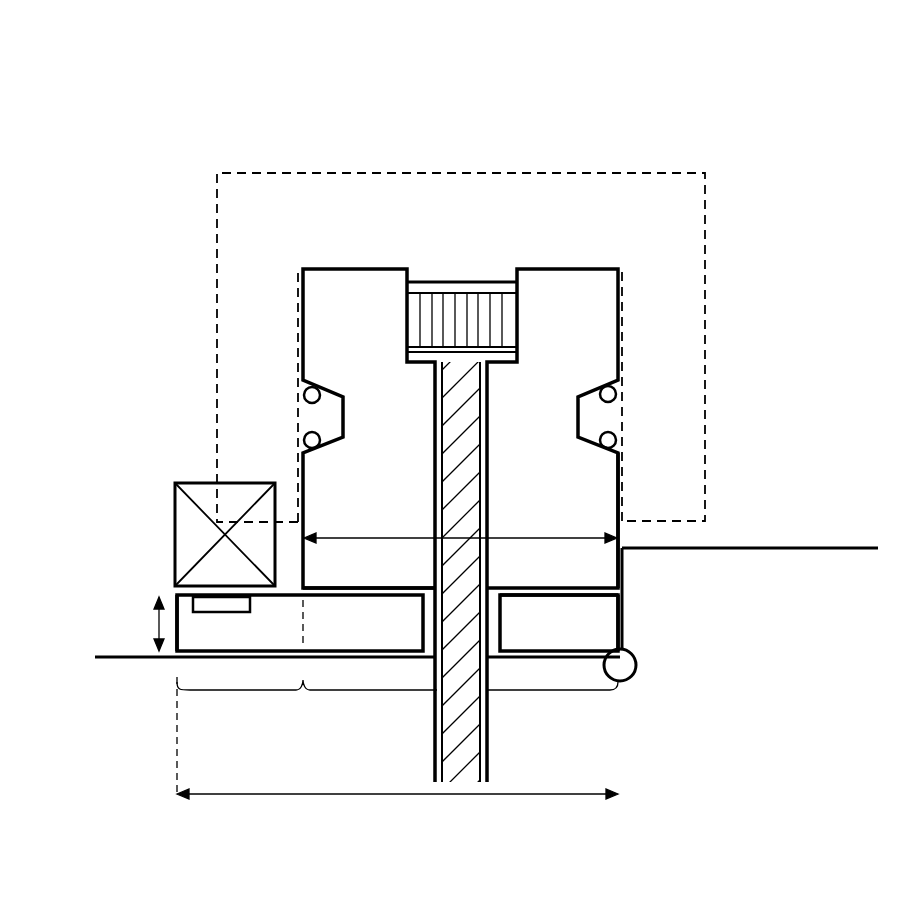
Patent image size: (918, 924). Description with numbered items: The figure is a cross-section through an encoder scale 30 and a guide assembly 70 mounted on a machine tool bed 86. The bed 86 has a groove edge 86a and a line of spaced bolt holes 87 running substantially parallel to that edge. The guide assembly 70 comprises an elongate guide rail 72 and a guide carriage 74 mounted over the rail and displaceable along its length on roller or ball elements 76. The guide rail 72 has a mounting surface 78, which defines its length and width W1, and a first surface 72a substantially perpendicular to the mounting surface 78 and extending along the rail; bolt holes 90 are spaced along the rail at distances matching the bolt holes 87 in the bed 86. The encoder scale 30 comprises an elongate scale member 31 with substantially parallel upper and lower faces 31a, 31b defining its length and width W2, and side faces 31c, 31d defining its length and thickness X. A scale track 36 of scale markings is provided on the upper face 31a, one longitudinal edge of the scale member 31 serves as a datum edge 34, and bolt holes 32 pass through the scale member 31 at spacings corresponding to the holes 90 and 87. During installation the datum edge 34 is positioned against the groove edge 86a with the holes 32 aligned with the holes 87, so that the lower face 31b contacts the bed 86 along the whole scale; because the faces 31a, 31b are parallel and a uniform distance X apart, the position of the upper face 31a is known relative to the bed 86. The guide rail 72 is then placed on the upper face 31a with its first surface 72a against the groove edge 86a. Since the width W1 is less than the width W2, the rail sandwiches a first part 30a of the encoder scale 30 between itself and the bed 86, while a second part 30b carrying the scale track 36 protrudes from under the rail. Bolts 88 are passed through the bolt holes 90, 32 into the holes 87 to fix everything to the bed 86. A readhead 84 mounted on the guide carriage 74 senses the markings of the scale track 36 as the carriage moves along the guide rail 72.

The guide assembly 70 is at (741, 90).
The guide rail 72 is at (372, 288).
The first surface of the guide rail 72a is at (620, 503).
The guide carriage 74 is at (293, 193).
The roller or ball elements 76 is at (306, 440).
The mounting surface 78 is at (361, 594).
The readhead 84 is at (197, 488).
The machine tool bed 86 is at (115, 667).
The groove edge 86a is at (622, 582).
The bolt holes in the machine tool bed 87 is at (486, 740).
The bolts 88 is at (458, 287).
The bolt holes in the guide rail 90 is at (506, 278).
The encoder scale 30 is at (104, 589).
The first part of the encoder scale 30a is at (462, 688).
The second part of the encoder scale 30b is at (240, 692).
The scale member 31 is at (193, 636).
The upper face 31a is at (555, 593).
The lower face 31b is at (607, 654).
The side face 31c is at (175, 607).
The side face 31d is at (620, 612).
The bolt holes in the scale member 32 is at (636, 668).
The datum edge 34 is at (622, 598).
The scale track 36 is at (217, 605).
The width of the guide rail W1 is at (505, 535).
The width of the scale member W2 is at (405, 797).
The thickness of the scale member X is at (159, 622).